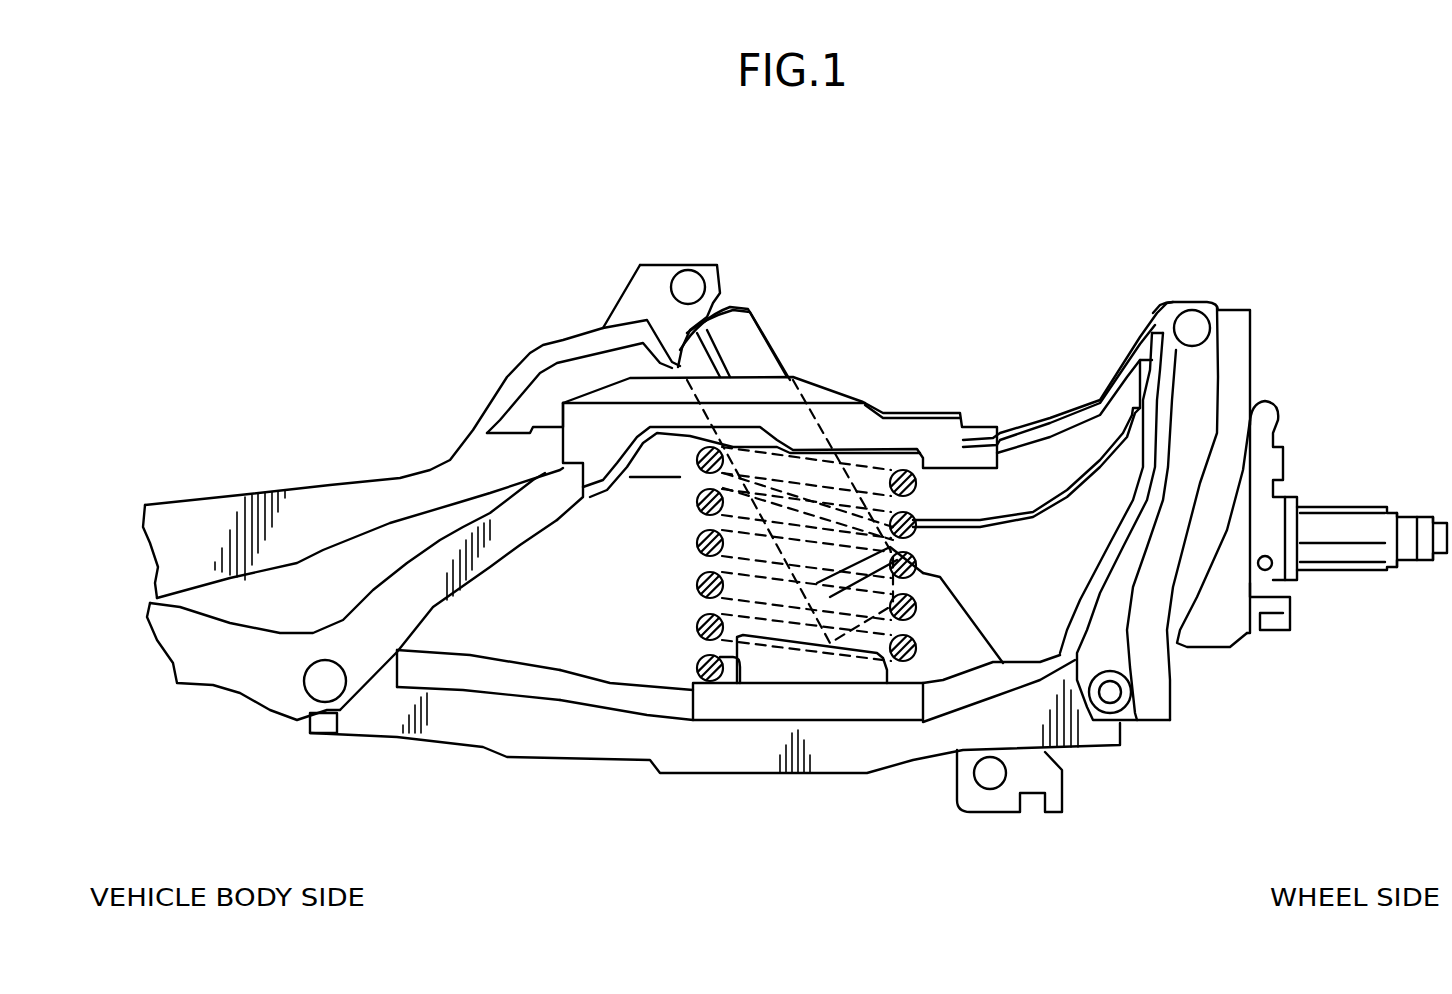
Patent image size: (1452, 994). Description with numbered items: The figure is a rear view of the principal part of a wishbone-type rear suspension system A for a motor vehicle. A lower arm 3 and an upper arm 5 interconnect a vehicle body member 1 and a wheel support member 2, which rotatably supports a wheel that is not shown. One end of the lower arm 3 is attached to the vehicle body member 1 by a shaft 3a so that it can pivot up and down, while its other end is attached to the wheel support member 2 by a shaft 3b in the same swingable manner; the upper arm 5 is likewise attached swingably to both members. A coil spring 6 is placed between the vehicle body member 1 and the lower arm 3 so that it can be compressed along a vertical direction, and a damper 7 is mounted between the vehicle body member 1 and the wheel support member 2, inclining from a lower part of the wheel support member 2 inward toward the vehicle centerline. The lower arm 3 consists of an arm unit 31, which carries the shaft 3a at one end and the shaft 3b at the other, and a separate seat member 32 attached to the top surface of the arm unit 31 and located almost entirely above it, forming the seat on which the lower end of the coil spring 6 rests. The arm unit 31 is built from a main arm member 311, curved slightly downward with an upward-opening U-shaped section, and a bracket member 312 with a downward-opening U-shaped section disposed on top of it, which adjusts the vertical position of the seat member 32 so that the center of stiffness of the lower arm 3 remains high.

The suspension system A is at (372, 222).
The vehicle body member 1 is at (390, 478).
The wheel support member 2 is at (1233, 338).
The lower arm 3 is at (752, 774).
The shaft 3a is at (328, 690).
The shaft 3b is at (1112, 694).
The arm unit 31 is at (545, 774).
The main arm member 311 is at (578, 733).
The bracket member 312 is at (510, 680).
The seat member 32 is at (720, 703).
The upper arm 5 is at (1073, 408).
The coil spring 6 is at (697, 548).
The damper 7 is at (777, 346).